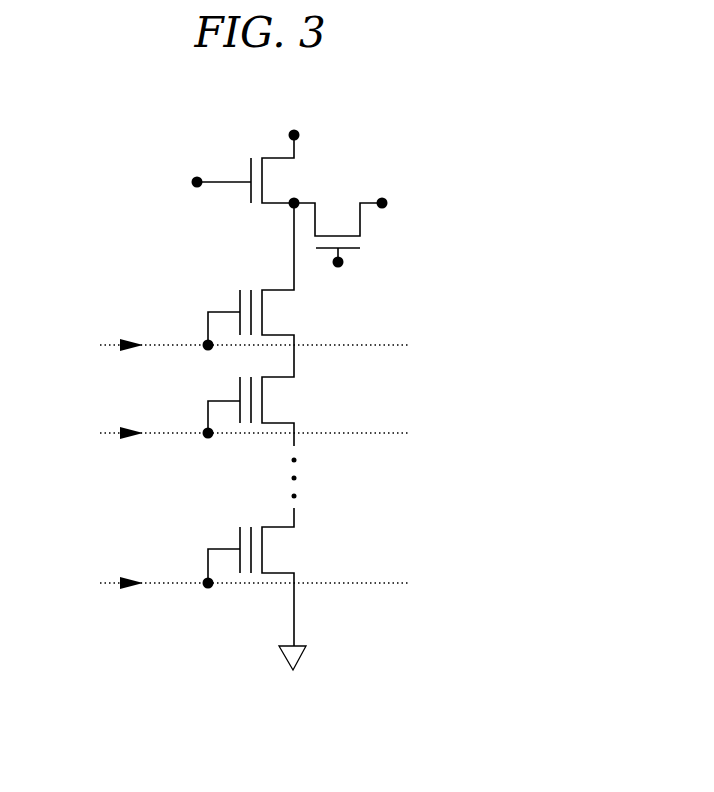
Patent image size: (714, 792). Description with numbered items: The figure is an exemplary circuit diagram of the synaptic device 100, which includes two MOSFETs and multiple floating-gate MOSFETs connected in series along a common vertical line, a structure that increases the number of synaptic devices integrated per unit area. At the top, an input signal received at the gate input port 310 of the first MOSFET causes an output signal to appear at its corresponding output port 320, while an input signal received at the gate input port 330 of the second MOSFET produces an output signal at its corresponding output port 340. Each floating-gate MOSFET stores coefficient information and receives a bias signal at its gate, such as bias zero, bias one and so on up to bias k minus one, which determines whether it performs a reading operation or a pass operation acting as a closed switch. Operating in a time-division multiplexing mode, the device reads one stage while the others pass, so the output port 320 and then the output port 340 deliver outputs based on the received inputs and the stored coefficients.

The synaptic device 100 is at (238, 728).
The gate input port 310 is at (167, 184).
The output port 320 is at (292, 117).
The gate input port 330 is at (339, 282).
The output port 340 is at (412, 204).